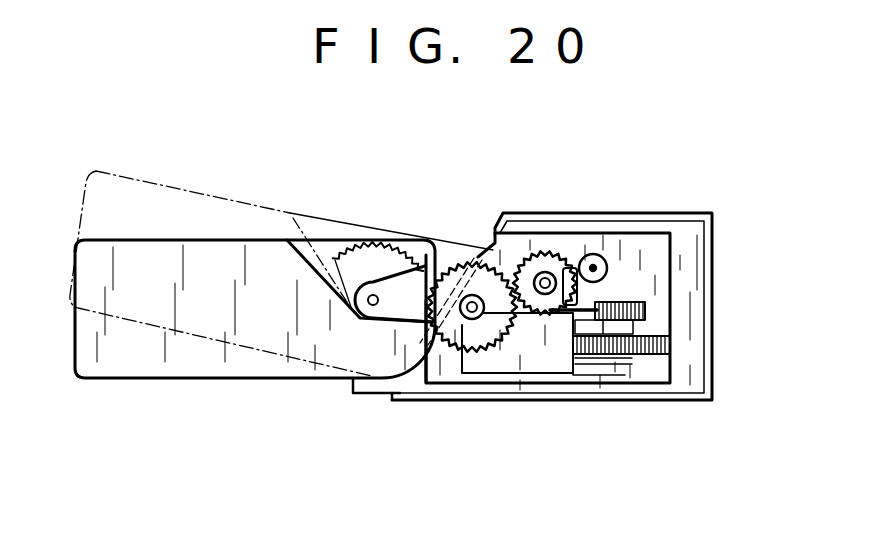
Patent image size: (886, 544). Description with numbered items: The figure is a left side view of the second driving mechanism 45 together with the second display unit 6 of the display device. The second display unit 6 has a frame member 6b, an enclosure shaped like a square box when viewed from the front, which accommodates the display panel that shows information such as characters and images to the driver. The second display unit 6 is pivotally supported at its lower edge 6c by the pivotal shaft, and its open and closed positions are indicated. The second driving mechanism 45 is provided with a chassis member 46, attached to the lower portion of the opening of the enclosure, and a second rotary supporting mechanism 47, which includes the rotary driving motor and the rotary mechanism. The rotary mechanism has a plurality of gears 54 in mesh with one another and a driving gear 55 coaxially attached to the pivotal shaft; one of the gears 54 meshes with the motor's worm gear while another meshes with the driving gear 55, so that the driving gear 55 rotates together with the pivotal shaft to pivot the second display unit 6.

The second display unit 6 is at (166, 195).
The frame member 6b is at (240, 362).
The lower edge 6c is at (368, 364).
The driving gear 55 is at (378, 240).
The gears 54 is at (462, 257).
The chassis member 46 is at (618, 213).
The second rotary supporting mechanism 47 is at (632, 281).
The second driving mechanism 45 is at (587, 342).